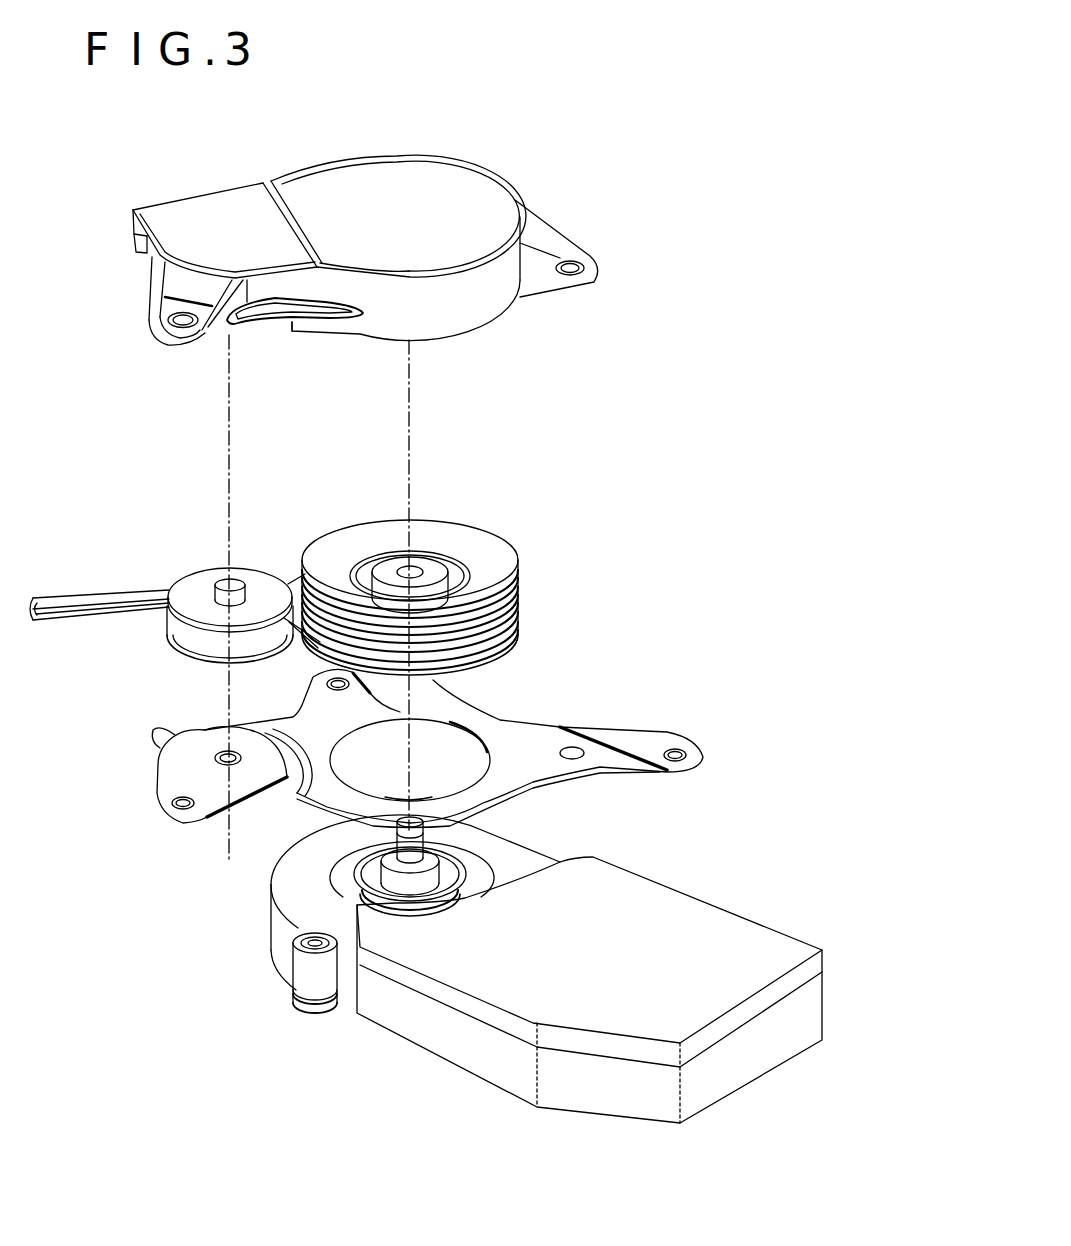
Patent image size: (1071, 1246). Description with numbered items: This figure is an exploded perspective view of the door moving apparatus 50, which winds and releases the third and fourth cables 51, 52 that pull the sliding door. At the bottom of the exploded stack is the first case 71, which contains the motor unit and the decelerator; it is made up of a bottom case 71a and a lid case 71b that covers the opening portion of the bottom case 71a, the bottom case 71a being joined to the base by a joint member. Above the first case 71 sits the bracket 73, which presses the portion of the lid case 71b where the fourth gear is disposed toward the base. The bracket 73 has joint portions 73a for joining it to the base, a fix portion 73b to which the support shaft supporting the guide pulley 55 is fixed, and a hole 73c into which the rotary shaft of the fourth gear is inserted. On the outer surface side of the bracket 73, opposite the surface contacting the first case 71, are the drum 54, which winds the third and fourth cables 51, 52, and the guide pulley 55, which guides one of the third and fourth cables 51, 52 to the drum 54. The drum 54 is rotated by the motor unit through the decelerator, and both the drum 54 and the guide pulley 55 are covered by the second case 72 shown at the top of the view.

The door moving apparatus 50 is at (701, 160).
The third cable 51 is at (110, 596).
The fourth cable 52 is at (109, 614).
The drum 54 is at (480, 553).
The guide pulley 55 is at (215, 580).
The first case 71 is at (906, 948).
The bottom case 71a is at (823, 1012).
The lid case 71b is at (823, 960).
The second case 72 is at (472, 184).
The bracket 73 is at (525, 735).
The joint portions 73a is at (325, 682).
The fix portion 73b is at (225, 752).
The hole 73c is at (487, 770).